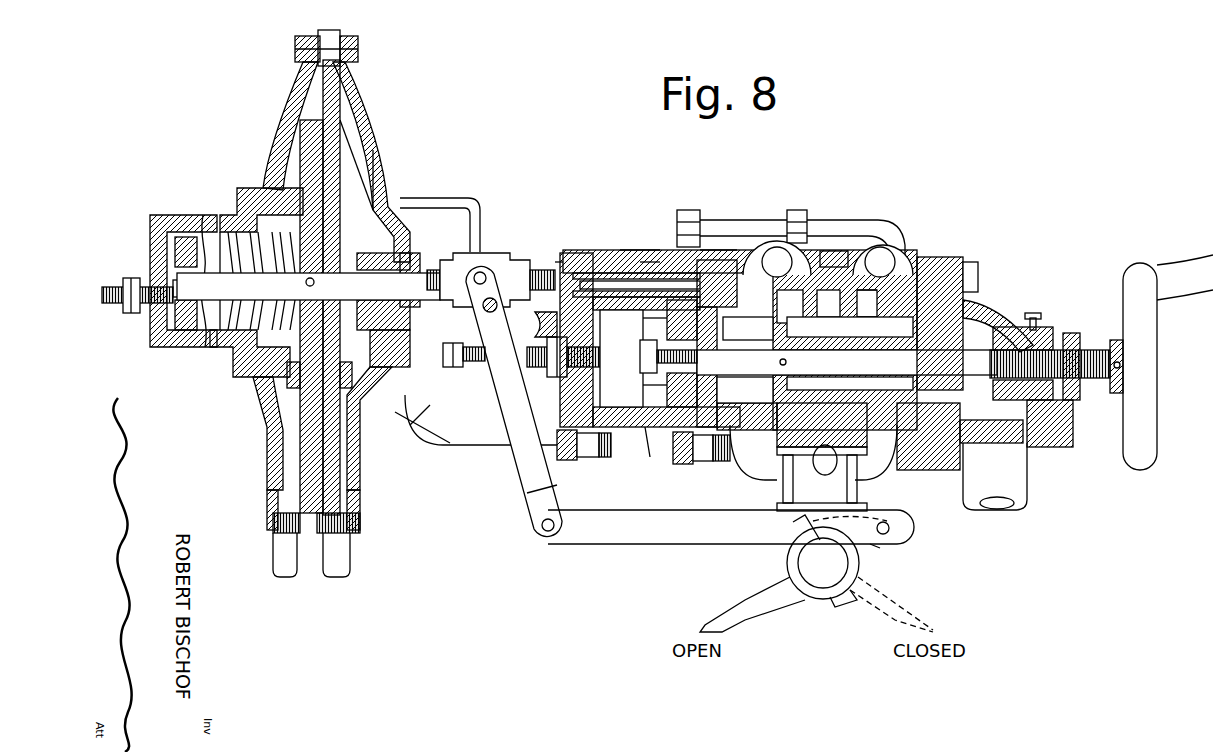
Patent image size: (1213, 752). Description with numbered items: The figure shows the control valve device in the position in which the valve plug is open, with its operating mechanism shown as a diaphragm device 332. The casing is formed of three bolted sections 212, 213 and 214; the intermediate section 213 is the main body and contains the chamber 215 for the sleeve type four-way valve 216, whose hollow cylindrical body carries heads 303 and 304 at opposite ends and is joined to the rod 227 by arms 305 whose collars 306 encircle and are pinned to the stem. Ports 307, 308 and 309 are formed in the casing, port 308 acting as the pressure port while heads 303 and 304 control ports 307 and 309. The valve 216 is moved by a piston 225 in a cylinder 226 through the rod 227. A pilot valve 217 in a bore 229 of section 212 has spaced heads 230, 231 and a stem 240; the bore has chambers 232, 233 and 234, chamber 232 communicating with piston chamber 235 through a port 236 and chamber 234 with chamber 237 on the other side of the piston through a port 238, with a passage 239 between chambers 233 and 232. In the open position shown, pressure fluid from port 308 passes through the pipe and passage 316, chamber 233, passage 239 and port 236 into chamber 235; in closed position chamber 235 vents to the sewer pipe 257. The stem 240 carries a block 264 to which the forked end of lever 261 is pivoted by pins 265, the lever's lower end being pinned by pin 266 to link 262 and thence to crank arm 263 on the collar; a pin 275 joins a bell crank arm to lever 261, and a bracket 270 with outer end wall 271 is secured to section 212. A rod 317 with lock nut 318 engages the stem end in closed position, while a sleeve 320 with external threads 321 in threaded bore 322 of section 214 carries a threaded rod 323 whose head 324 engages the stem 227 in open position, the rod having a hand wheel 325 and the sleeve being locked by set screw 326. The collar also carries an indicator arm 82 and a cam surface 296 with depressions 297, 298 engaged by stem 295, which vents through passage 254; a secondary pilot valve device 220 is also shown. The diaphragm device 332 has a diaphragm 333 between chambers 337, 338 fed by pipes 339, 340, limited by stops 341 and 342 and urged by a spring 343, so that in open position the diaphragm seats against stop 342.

The indicator arm 82 is at (733, 593).
The casing section 212 is at (603, 460).
The intermediate casing section 213 is at (832, 296).
The casing section 214 is at (980, 318).
The valve chamber 215 is at (922, 315).
The sleeve type four-way valve 216 is at (745, 460).
The pilot valve 217 is at (620, 270).
The secondary pilot valve device 220 is at (840, 477).
The piston 225 is at (652, 384).
The cylinder 226 is at (650, 457).
The rod 227 is at (847, 363).
The bore 229 is at (597, 272).
The head 230 is at (556, 264).
The head 231 is at (695, 250).
The chamber 232 is at (573, 250).
The chamber 233 is at (640, 250).
The chamber 234 is at (648, 258).
The piston chamber 235 is at (655, 318).
The port 236 is at (570, 314).
The chamber 237 is at (714, 330).
The port 238 is at (715, 250).
The passage 239 is at (652, 350).
The stem 240 is at (432, 252).
The passage 254 is at (780, 502).
The sewer pipe 257 is at (1000, 484).
The lever 261 is at (500, 382).
The link 262 is at (597, 531).
The crank arm 263 is at (877, 547).
The block 264 is at (498, 258).
The pins 265 is at (481, 272).
The pin 266 is at (540, 527).
The bracket 270 is at (410, 410).
The outer end wall 271 is at (398, 202).
The pin 275 is at (484, 310).
The stem 295 is at (893, 524).
The cam surface 296 is at (843, 605).
The depression 297 is at (867, 580).
The depression 298 is at (787, 553).
The head 303 is at (907, 392).
The head 304 is at (714, 386).
The arms 305 is at (887, 337).
The collars 306 is at (887, 377).
The port 307 is at (882, 288).
The pressure port 308 is at (868, 298).
The port 309 is at (790, 292).
The pipe and passage 316 is at (768, 220).
The rod 317 is at (448, 355).
The lock nut 318 is at (556, 346).
The sleeve 320 is at (1057, 398).
The external threads 321 is at (1010, 337).
The threaded bore 322 is at (1038, 400).
The threaded rod 323 is at (1090, 348).
The head 324 is at (1015, 332).
The hand wheel 325 is at (1140, 272).
The set screw 326 is at (1040, 332).
The diaphragm device 332 is at (352, 100).
The diaphragm 333 is at (307, 162).
The chamber 337 is at (352, 167).
The chamber 338 is at (285, 176).
The pipe 339 is at (344, 553).
The pipe 340 is at (280, 553).
The stop 341 is at (350, 147).
The stop 342 is at (296, 146).
The spring 343 is at (210, 348).